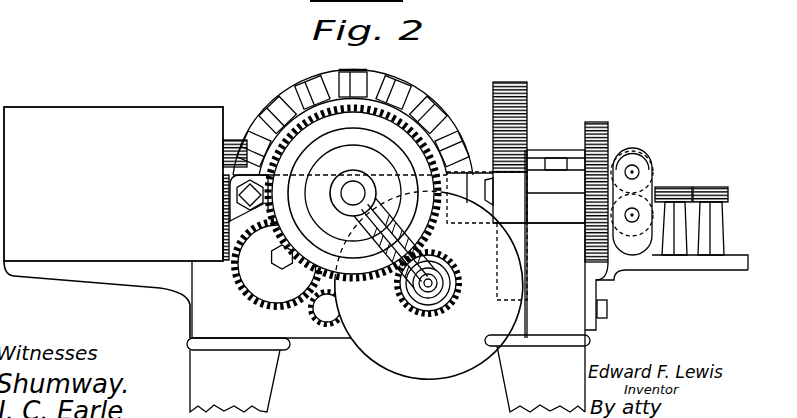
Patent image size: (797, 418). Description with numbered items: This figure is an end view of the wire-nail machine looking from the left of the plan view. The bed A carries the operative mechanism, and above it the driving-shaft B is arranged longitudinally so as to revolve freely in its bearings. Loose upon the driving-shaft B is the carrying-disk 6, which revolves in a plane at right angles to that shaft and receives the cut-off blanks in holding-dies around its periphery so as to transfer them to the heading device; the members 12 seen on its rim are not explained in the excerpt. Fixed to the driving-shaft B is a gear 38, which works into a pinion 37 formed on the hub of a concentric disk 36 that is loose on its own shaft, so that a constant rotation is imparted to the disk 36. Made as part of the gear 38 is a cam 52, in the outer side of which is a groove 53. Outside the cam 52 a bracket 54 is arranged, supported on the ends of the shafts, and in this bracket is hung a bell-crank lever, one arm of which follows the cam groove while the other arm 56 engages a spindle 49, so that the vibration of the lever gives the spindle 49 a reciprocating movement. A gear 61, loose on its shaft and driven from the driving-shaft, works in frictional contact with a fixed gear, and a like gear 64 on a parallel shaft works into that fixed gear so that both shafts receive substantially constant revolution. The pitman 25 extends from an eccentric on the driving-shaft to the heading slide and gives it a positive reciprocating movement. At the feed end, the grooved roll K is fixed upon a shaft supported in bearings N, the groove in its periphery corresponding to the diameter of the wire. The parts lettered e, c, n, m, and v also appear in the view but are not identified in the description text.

The pitman 25 is at (233, 198).
The column e is at (504, 152).
The column c is at (596, 186).
The disk 6 is at (353, 122).
The magnet blocks 12 is at (353, 118).
The concentric disk 36 is at (429, 285).
The bed A is at (277, 269).
The gear 61 is at (272, 257).
The gear 64 is at (327, 308).
The gear 38 is at (353, 186).
The groove 53 is at (353, 193).
The cam 52 is at (353, 193).
The driving-shaft B is at (353, 193).
The bracket 54 is at (395, 243).
The arm of bell-crank lever 56 is at (427, 281).
The pinion 37 is at (436, 283).
The spindle 49 is at (407, 298).
The bearings N is at (632, 201).
The roller n is at (632, 158).
The grooved roll K is at (634, 228).
The posts m is at (693, 228).
The binding blocks v is at (691, 189).